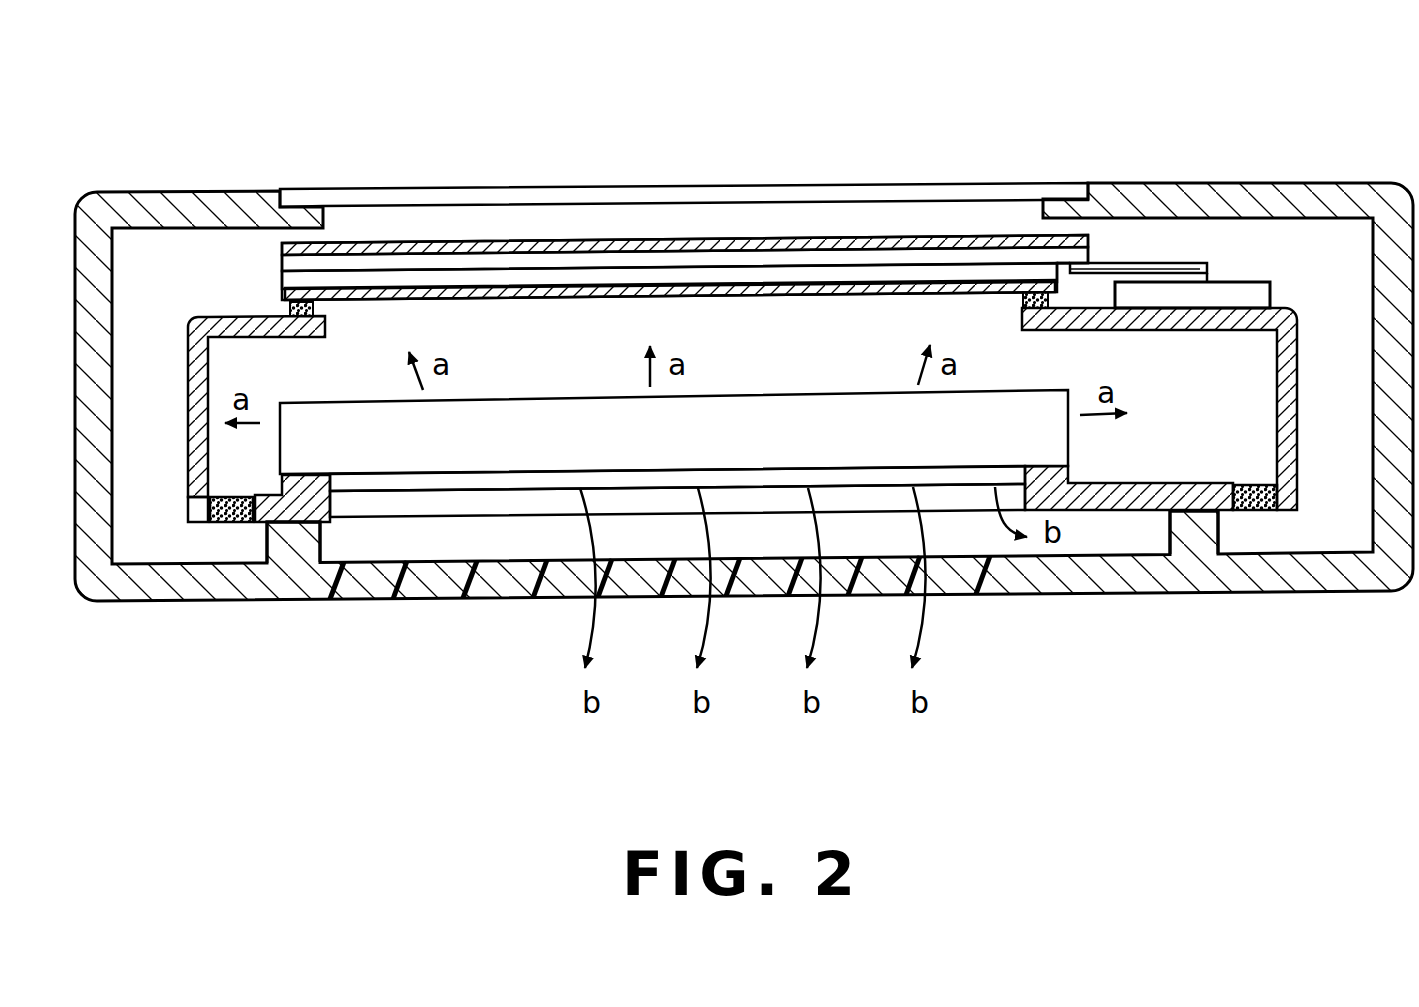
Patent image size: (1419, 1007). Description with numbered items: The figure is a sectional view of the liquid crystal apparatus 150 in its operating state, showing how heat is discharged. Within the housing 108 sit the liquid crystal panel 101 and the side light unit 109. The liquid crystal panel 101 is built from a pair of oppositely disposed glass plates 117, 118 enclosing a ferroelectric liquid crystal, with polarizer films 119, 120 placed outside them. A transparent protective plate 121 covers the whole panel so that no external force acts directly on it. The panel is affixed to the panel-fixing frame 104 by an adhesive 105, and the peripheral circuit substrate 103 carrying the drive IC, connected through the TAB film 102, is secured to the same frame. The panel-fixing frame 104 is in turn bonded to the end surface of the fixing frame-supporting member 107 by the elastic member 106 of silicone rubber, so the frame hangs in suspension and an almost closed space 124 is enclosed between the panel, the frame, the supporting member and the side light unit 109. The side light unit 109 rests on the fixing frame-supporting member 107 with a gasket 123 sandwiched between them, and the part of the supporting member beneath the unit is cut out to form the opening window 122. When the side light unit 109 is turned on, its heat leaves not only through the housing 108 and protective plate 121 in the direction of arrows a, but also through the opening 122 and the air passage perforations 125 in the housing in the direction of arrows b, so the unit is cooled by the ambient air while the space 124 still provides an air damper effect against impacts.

The liquid crystal panel 101 is at (423, 236).
The TAB film 102 is at (1130, 264).
The peripheral circuit (drive IC) substrate 103 is at (1232, 292).
The panel-fixing frame 104 is at (230, 320).
The adhesive 105 is at (1024, 292).
The elastic member 106 is at (232, 522).
The fixing frame-supporting member 107 is at (288, 520).
The housing 108 is at (303, 545).
The side light unit 109 is at (993, 438).
The glass plate 117 is at (848, 250).
The glass plate 118 is at (933, 270).
The polarizer film 119 is at (512, 247).
The polarizer film 120 is at (597, 290).
The protective plate 121 is at (318, 197).
The opening window 122 is at (485, 500).
The gasket 123 is at (305, 476).
The almost closed space 124 is at (1255, 385).
The air passage perforations 125 is at (1062, 572).
The liquid crystal apparatus 150 is at (723, 150).